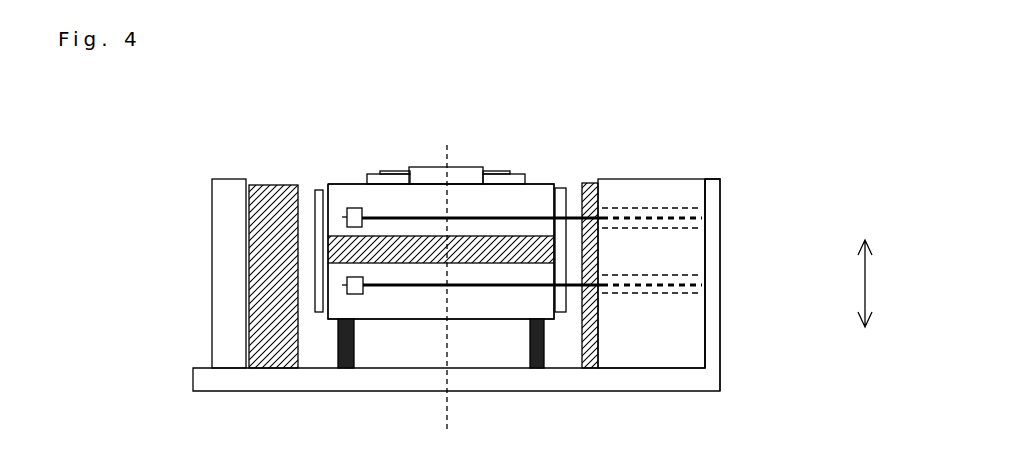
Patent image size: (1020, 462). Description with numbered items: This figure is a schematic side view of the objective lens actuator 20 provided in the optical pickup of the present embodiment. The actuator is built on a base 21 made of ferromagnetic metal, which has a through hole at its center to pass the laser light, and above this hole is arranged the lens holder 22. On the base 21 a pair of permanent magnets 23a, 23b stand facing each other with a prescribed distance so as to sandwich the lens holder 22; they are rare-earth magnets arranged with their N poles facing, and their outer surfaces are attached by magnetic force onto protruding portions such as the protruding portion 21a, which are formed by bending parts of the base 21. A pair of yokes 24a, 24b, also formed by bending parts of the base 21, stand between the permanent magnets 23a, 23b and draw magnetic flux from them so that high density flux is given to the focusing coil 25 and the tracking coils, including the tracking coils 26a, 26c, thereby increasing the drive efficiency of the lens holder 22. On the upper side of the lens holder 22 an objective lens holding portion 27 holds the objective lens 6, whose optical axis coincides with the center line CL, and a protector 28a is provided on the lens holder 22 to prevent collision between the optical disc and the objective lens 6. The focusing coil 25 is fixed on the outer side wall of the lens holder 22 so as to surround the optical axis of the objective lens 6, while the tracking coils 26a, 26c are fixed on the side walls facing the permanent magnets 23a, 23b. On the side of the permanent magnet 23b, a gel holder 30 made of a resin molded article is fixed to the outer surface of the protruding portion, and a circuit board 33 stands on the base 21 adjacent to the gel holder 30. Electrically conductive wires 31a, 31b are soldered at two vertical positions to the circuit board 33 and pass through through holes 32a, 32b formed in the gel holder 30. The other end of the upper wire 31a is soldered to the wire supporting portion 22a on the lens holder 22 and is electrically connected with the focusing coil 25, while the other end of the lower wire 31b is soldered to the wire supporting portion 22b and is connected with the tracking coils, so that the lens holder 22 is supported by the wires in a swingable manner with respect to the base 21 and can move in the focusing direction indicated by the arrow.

The objective lens actuator 20 is at (713, 81).
The base 21 is at (280, 385).
The protruding portion 21a is at (225, 242).
The lens holder 22 is at (441, 270).
The wire supporting portion 22a is at (353, 208).
The wire supporting portion 22b is at (355, 295).
The permanent magnet 23a is at (280, 187).
The permanent magnet 23b is at (590, 370).
The yoke 24a is at (340, 370).
The yoke 24b is at (533, 372).
The focusing coil 25 is at (337, 266).
The tracking coil 26a is at (322, 192).
The tracking coil 26c is at (563, 190).
The objective lens holding portion 27 is at (522, 178).
The protector 28a is at (468, 167).
The objective lens 6 is at (492, 173).
The gel holder 30 is at (613, 197).
The wire 31a is at (408, 202).
The wire 31b is at (488, 287).
The through hole 32a is at (668, 207).
The through hole 32b is at (648, 293).
The circuit board 33 is at (712, 248).